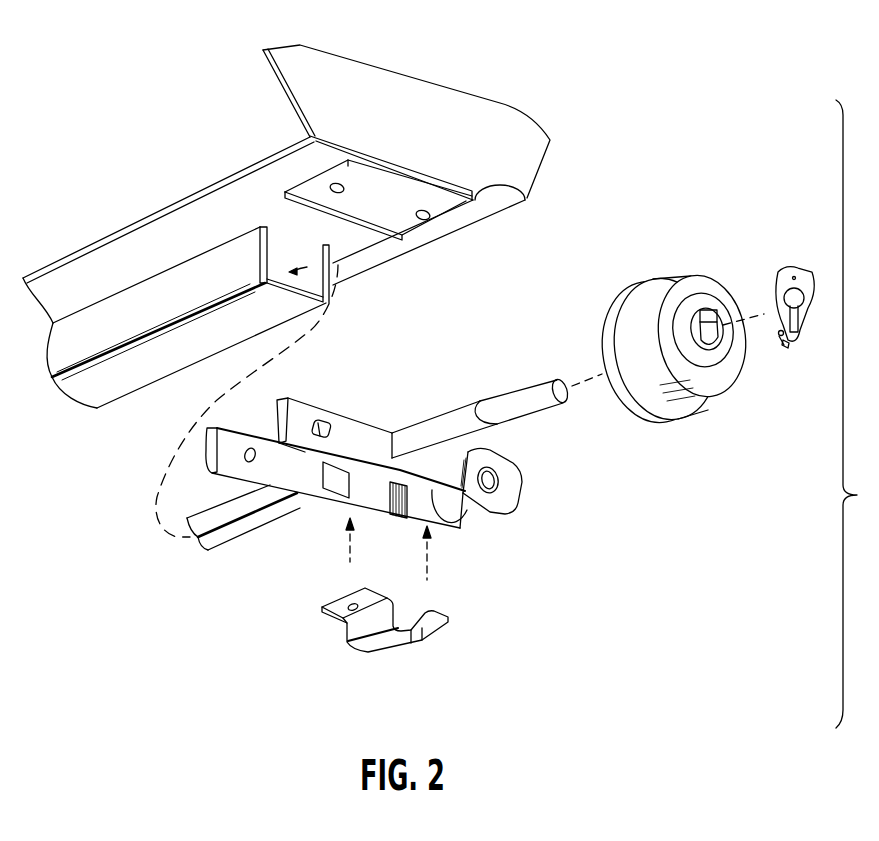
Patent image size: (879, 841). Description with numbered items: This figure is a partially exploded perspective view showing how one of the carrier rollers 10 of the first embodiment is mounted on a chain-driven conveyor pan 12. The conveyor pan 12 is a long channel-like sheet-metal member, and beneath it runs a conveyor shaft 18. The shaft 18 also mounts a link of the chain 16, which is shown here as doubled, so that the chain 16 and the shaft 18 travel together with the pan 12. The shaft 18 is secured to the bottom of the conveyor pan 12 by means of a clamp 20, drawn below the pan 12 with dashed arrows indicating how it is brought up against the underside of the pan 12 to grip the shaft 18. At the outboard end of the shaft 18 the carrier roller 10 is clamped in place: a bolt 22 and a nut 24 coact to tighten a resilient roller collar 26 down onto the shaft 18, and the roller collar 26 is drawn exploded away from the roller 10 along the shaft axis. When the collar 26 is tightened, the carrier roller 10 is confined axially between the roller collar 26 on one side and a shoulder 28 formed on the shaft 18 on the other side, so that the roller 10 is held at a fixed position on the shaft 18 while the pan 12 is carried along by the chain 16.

The carrier roller 10 is at (676, 250).
The conveyor pan 12 is at (513, 110).
The chain 16 is at (522, 490).
The conveyor shaft 18 is at (477, 400).
The clamp 20 is at (438, 630).
The bolt 22 is at (781, 336).
The nut 24 is at (785, 341).
The roller collar 26 is at (810, 288).
The shoulder 28 is at (500, 426).